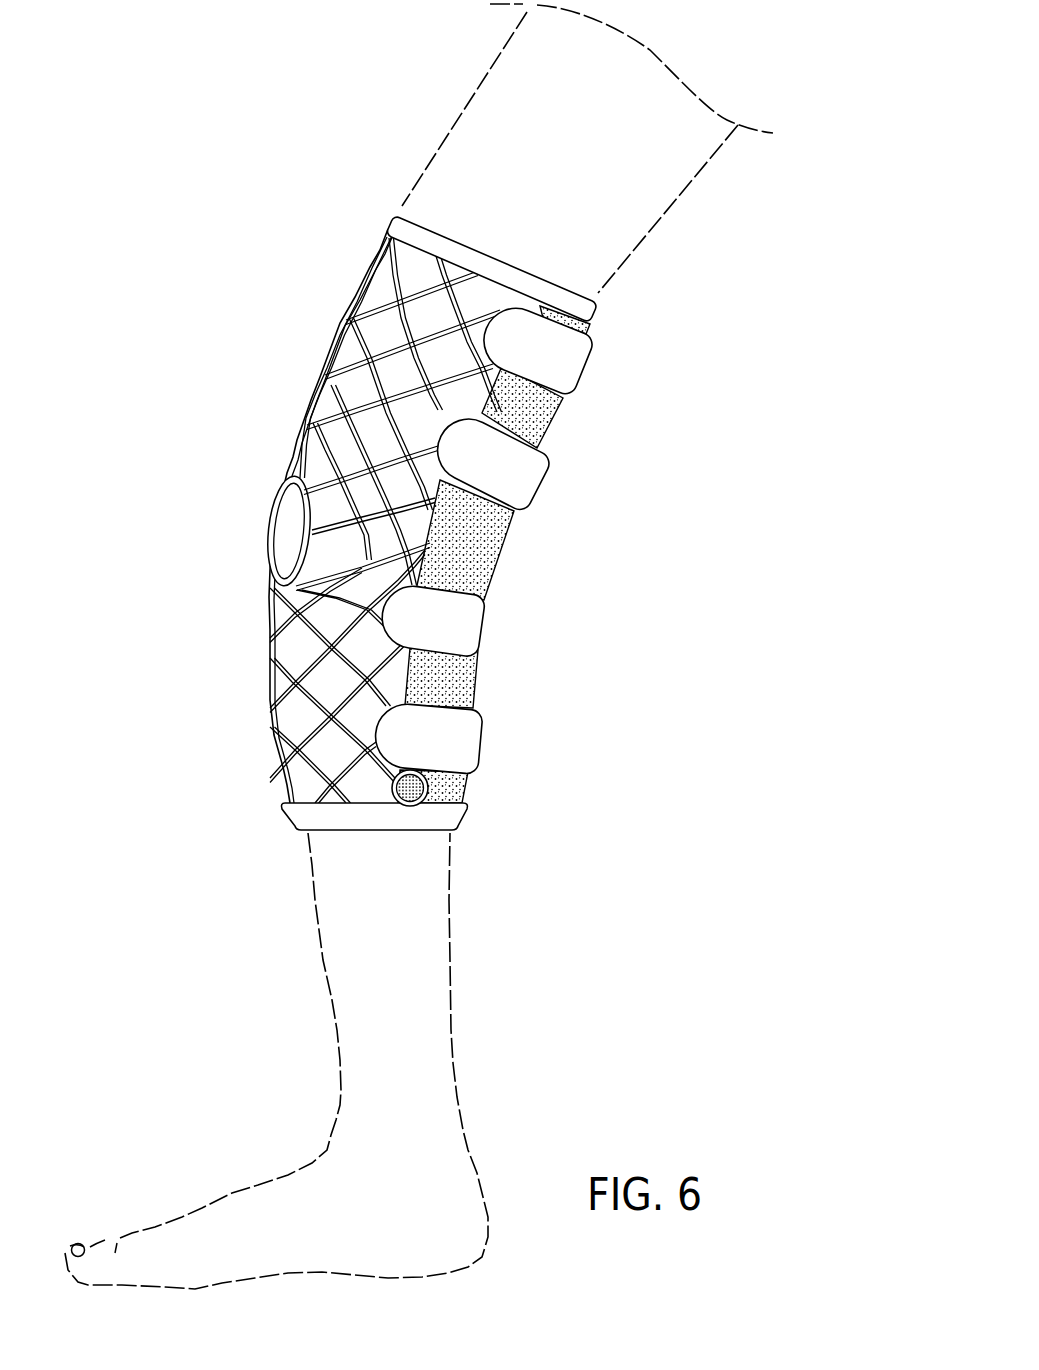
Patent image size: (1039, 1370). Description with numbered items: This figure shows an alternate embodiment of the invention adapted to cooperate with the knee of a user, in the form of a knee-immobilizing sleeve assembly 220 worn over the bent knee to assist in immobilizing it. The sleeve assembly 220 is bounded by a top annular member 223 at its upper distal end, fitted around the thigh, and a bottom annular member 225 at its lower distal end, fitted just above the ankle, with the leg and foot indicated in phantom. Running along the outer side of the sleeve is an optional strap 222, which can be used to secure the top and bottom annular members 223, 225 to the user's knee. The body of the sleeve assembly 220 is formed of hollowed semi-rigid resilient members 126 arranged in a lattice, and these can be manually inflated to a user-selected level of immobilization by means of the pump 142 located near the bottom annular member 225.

The hollowed semi-rigid resilient members 126 is at (375, 307).
The pump 142 is at (420, 786).
The knee-immobilizing sleeve assembly 220 is at (286, 424).
The strap 222 is at (503, 475).
The top annular member 223 is at (572, 300).
The bottom annular member 225 is at (316, 813).